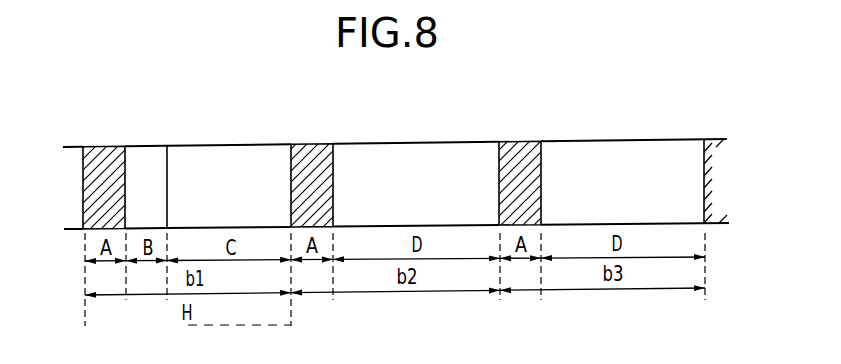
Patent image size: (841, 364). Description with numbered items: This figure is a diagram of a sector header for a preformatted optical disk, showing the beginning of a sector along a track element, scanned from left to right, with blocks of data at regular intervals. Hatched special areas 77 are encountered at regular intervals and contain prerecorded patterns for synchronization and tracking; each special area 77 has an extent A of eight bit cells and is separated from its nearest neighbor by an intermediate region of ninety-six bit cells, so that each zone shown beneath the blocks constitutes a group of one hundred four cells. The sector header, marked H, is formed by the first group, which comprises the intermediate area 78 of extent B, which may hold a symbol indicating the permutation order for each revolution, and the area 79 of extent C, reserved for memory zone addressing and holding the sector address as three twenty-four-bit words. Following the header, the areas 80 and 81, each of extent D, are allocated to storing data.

The special area 77 is at (99, 166).
The intermediate area 78 is at (143, 167).
The area reserved for memory zone addressing 79 is at (210, 160).
The data area 80 is at (398, 150).
The data area 81 is at (598, 150).